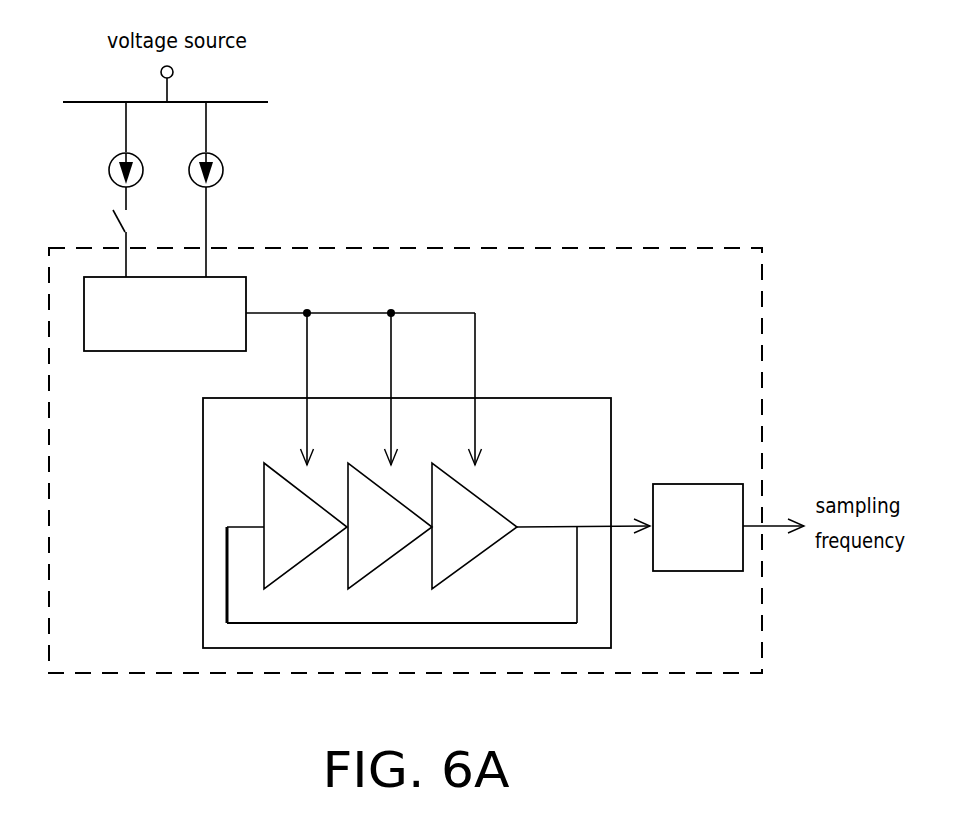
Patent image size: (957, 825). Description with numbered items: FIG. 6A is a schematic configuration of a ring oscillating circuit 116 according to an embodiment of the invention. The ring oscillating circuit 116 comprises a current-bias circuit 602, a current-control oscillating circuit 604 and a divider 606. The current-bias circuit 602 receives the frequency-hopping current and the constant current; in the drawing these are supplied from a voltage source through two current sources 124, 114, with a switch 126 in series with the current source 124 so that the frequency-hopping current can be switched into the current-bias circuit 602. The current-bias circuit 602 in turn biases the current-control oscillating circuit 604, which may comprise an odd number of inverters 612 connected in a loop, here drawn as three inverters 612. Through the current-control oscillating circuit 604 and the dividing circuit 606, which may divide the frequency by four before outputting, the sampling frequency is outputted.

The current source 114 is at (222, 165).
The current source 124 is at (114, 158).
The switch 126 is at (130, 219).
The ring oscillating circuit 116 is at (430, 248).
The current-bias circuit 602 is at (246, 290).
The current-control oscillating circuit 604 is at (536, 398).
The divider 606 is at (698, 484).
The inverter 612 is at (305, 558).